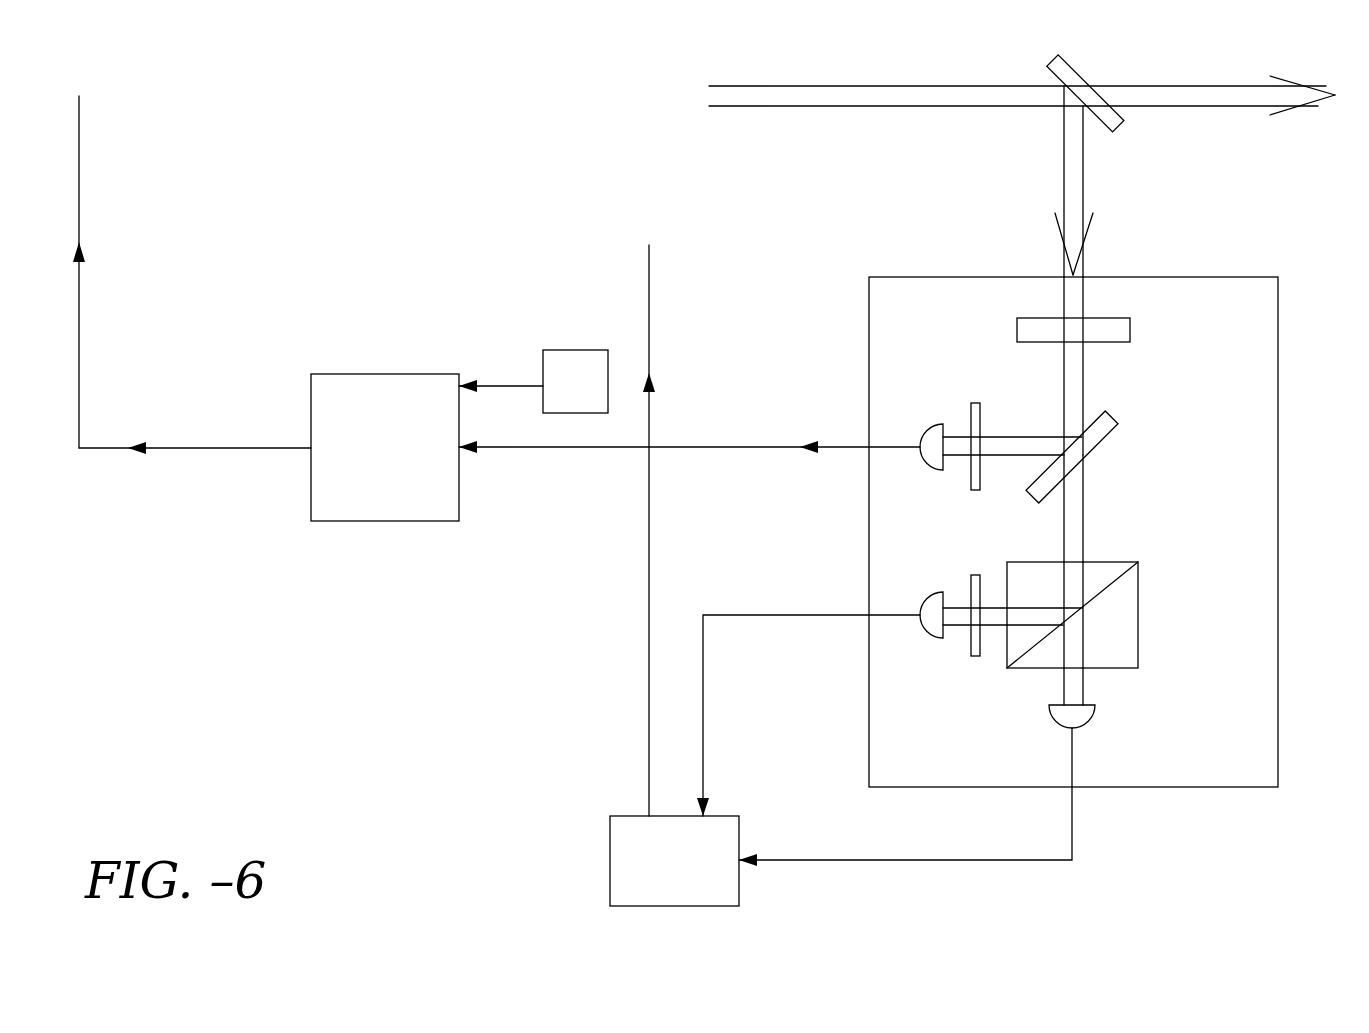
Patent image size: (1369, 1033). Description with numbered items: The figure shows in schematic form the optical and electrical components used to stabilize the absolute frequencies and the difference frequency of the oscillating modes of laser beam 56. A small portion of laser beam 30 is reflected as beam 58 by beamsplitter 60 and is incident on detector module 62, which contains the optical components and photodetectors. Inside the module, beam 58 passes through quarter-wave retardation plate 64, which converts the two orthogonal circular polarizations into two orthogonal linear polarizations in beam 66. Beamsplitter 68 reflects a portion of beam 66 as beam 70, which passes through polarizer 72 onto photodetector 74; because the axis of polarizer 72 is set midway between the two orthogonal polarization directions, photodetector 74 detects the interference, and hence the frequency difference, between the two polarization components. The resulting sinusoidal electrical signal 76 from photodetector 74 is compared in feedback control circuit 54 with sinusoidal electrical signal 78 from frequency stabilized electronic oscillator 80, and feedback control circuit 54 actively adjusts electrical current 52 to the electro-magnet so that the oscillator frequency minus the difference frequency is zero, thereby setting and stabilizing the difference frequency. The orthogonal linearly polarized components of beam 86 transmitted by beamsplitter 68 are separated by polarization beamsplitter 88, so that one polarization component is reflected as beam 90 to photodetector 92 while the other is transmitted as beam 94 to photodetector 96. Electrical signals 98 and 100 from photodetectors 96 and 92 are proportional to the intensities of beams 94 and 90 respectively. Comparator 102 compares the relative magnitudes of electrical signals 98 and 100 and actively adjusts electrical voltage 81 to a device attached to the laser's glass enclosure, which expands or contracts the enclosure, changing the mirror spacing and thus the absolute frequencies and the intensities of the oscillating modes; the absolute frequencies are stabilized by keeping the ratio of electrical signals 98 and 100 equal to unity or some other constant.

The laser beam 30 is at (873, 86).
The electrical current 52 is at (79, 287).
The feedback control circuit 54 is at (356, 522).
The laser beam 56 is at (1195, 86).
The beam 58 is at (1083, 183).
The beamsplitter 60 is at (1070, 62).
The detector module 62 is at (1212, 277).
The quarter-wave retardation plate 64 is at (1130, 332).
The beam 66 is at (1083, 391).
The beamsplitter 68 is at (1095, 450).
The beam 70 is at (1012, 437).
The polarizer 72 is at (975, 403).
The photodetector 74 is at (921, 432).
The sinusoidal electrical signal 76 is at (603, 452).
The sinusoidal electrical signal 78 is at (487, 383).
The frequency stabilized electronic oscillator 80 is at (580, 350).
The electrical voltage 81 is at (650, 338).
The beam 86 is at (1083, 527).
The polarization beamsplitter 88 is at (1138, 622).
The beam 90 is at (957, 626).
The photodetector 92 is at (920, 605).
The beam 94 is at (1083, 685).
The photodetector 96 is at (1090, 722).
The electrical signal 98 is at (895, 860).
The electrical signal 100 is at (734, 613).
The comparator 102 is at (610, 862).